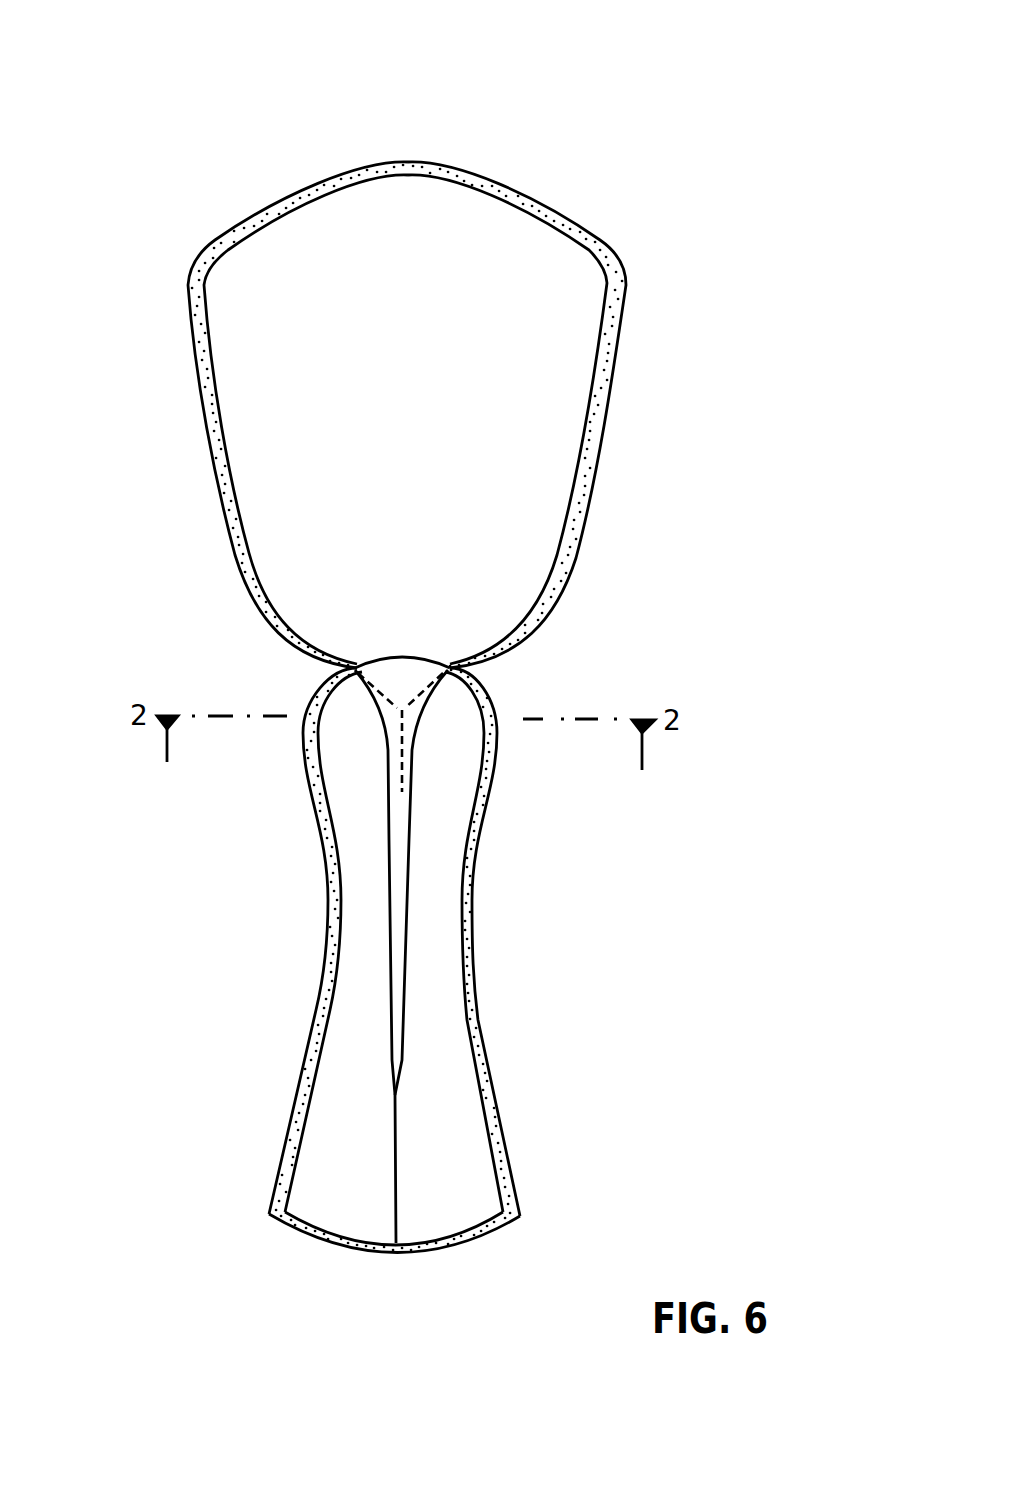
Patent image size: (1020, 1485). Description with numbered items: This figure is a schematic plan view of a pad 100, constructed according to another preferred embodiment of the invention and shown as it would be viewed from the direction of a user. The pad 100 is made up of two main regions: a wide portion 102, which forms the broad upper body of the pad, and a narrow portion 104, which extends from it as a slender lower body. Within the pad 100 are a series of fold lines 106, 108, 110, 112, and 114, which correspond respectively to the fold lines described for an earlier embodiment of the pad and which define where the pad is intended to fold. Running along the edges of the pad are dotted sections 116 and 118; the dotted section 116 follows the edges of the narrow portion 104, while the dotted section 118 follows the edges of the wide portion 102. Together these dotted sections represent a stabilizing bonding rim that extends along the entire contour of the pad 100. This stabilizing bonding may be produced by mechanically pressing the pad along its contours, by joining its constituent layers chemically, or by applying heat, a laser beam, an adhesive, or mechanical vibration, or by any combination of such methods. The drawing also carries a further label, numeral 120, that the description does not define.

The pad 100 is at (462, 44).
The wide portion 102 is at (433, 283).
The narrow portion 104 is at (463, 791).
The fold line 106 is at (424, 695).
The fold line 108 is at (371, 695).
The fold line 110 is at (427, 675).
The fold line 112 is at (376, 682).
The fold line 114 is at (412, 654).
The dotted section 116 is at (472, 852).
The dotted section 118 is at (607, 389).
The left stem wall 120 is at (328, 879).